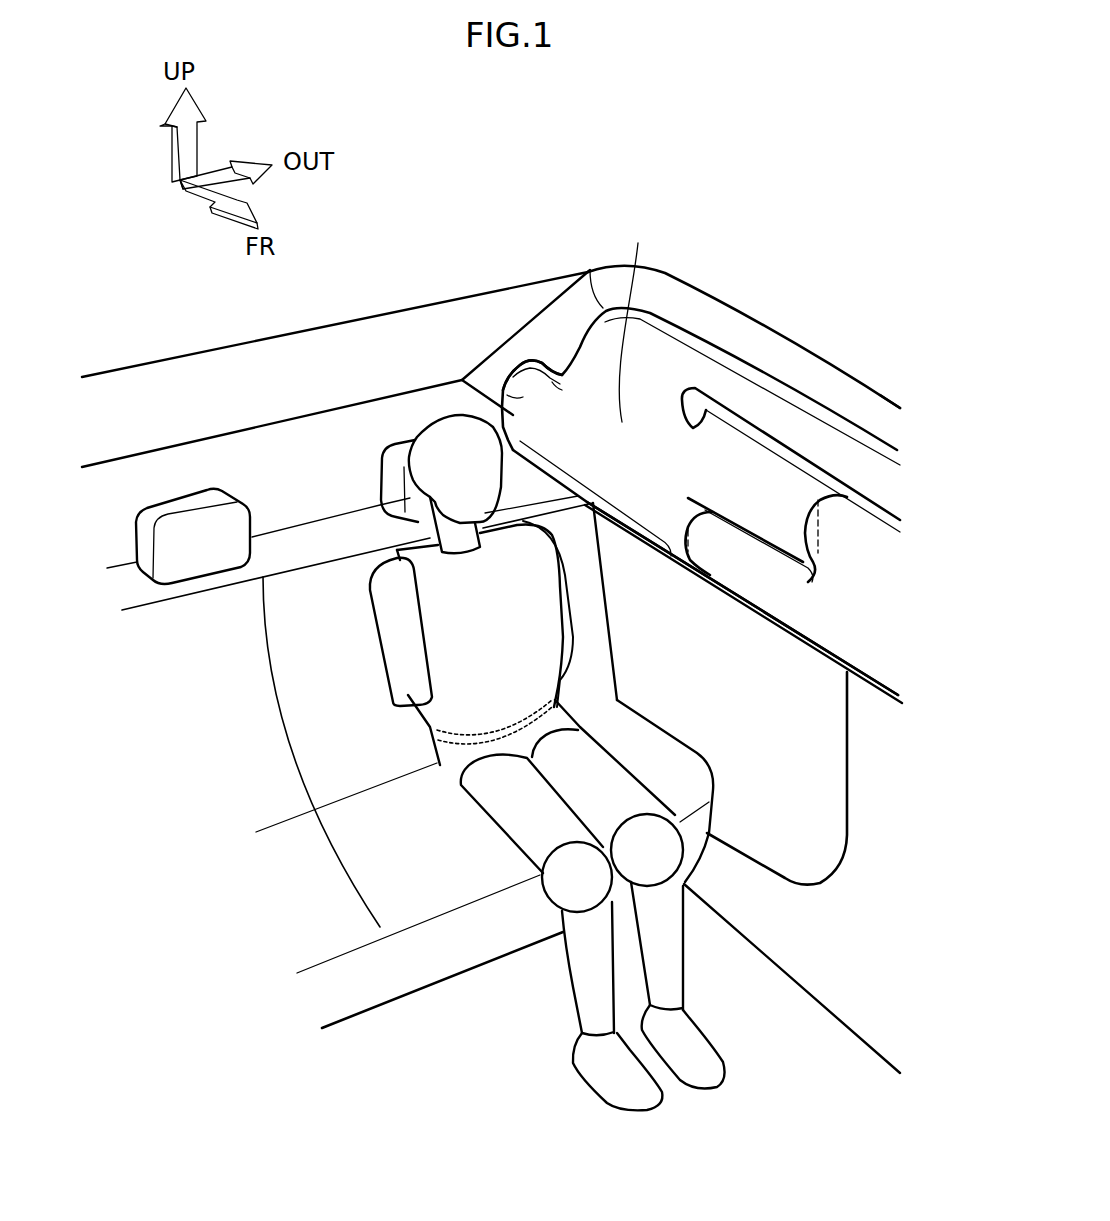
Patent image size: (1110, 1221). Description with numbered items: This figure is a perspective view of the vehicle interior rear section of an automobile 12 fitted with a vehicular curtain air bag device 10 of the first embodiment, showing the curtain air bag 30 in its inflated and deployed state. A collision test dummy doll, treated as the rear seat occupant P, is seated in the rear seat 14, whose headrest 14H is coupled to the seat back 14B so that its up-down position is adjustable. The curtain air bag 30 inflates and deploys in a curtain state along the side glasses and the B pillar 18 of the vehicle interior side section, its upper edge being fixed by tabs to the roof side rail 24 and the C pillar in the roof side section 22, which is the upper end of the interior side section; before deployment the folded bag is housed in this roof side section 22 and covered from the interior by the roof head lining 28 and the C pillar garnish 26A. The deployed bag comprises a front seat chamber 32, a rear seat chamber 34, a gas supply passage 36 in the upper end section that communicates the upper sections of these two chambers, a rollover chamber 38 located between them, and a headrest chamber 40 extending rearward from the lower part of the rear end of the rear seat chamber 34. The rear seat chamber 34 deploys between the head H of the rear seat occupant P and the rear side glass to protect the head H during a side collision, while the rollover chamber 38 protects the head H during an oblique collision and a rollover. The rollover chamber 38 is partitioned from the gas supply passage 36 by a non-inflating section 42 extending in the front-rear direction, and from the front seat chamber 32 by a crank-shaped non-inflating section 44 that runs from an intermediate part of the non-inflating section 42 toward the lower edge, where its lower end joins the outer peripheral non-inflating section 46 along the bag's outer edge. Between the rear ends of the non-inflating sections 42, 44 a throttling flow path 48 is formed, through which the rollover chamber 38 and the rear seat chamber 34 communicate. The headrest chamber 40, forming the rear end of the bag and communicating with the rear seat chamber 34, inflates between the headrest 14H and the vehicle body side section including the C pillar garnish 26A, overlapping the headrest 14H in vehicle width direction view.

The vehicular curtain air bag device 10 is at (730, 625).
The automobile 12 is at (753, 186).
The rear seat 14 is at (463, 973).
The seat back 14B is at (330, 537).
The headrest 14H is at (397, 455).
The B pillar 18 is at (870, 775).
The roof side section 22 is at (790, 338).
The roof side rail 24 is at (835, 385).
The C pillar garnish 26A is at (552, 322).
The roof head lining 28 is at (877, 412).
The curtain air bag 30 is at (733, 356).
The front seat chamber 32 is at (837, 613).
The rear seat chamber 34 is at (636, 321).
The gas supply passage 36 is at (880, 483).
The rollover chamber 38 is at (760, 503).
The headrest chamber 40 is at (520, 362).
The non-inflating section 42 is at (753, 433).
The crank-shaped non-inflating section 44 is at (808, 537).
The outer peripheral non-inflating section 46 is at (678, 314).
The throttling flow path 48 is at (693, 455).
The head H is at (450, 430).
The neck N is at (467, 535).
The rear seat occupant P is at (387, 660).